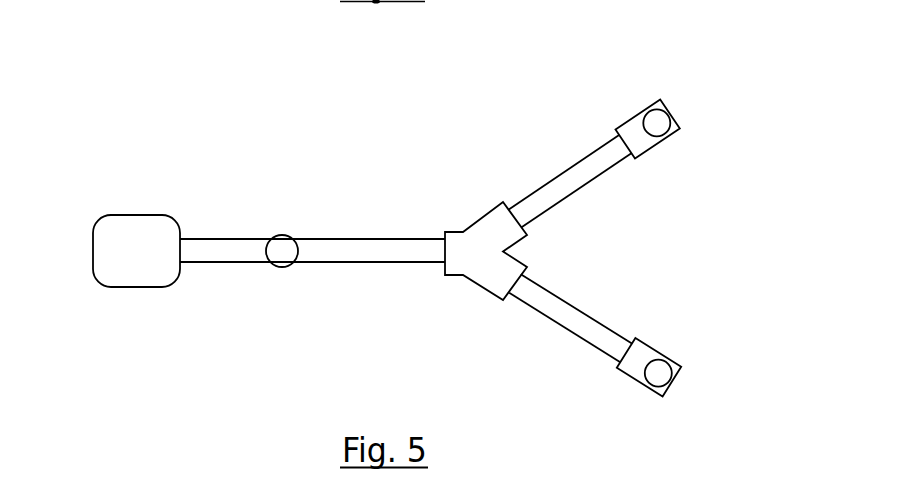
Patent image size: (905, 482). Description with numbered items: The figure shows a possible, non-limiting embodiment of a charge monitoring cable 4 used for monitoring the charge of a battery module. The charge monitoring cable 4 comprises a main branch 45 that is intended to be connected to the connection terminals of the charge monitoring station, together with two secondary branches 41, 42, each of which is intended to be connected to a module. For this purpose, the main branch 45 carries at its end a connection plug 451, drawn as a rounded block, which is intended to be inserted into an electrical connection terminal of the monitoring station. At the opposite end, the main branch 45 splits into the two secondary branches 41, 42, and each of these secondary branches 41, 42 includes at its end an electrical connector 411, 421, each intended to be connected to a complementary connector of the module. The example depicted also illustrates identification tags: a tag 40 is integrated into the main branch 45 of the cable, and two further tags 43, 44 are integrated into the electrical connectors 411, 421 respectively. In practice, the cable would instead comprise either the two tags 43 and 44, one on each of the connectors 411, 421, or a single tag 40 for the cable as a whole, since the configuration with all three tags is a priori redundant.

The charge monitoring cable 4 is at (362, 148).
The main branch 45 is at (210, 212).
The connection plug 451 is at (125, 248).
The tag 40 is at (277, 252).
The secondary branch 41 is at (563, 190).
The electrical connector 411 is at (645, 147).
The tag 43 is at (660, 118).
The secondary branch 42 is at (565, 315).
The electrical connector 421 is at (643, 348).
The tag 44 is at (660, 373).